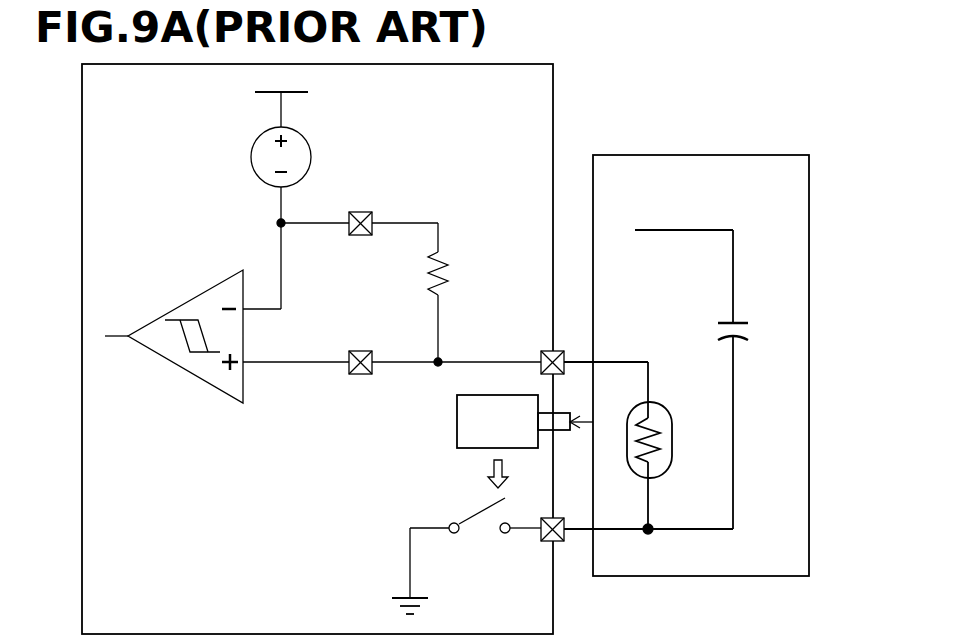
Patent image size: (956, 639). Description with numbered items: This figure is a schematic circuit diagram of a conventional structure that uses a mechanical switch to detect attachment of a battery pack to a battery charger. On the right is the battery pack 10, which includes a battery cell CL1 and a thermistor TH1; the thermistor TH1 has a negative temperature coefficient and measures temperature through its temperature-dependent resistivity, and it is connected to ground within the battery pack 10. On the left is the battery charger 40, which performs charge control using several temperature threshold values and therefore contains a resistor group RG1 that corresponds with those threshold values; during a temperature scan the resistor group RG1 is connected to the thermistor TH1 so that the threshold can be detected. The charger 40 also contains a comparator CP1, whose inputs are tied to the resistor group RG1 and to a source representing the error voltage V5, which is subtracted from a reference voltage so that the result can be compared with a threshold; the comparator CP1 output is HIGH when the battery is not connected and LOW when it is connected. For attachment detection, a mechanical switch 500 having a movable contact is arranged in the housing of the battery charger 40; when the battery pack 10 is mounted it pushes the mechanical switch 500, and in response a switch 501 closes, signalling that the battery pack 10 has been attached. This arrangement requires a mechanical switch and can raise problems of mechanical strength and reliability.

The battery charger 40 is at (553, 125).
The battery pack 10 is at (771, 155).
The error voltage V5 is at (262, 157).
The comparator CP1 is at (170, 309).
The resistor group RG1 is at (448, 265).
The battery cell CL1 is at (740, 320).
The thermistor TH1 is at (692, 408).
The mechanical switch 500 is at (457, 425).
The switch 501 is at (471, 518).